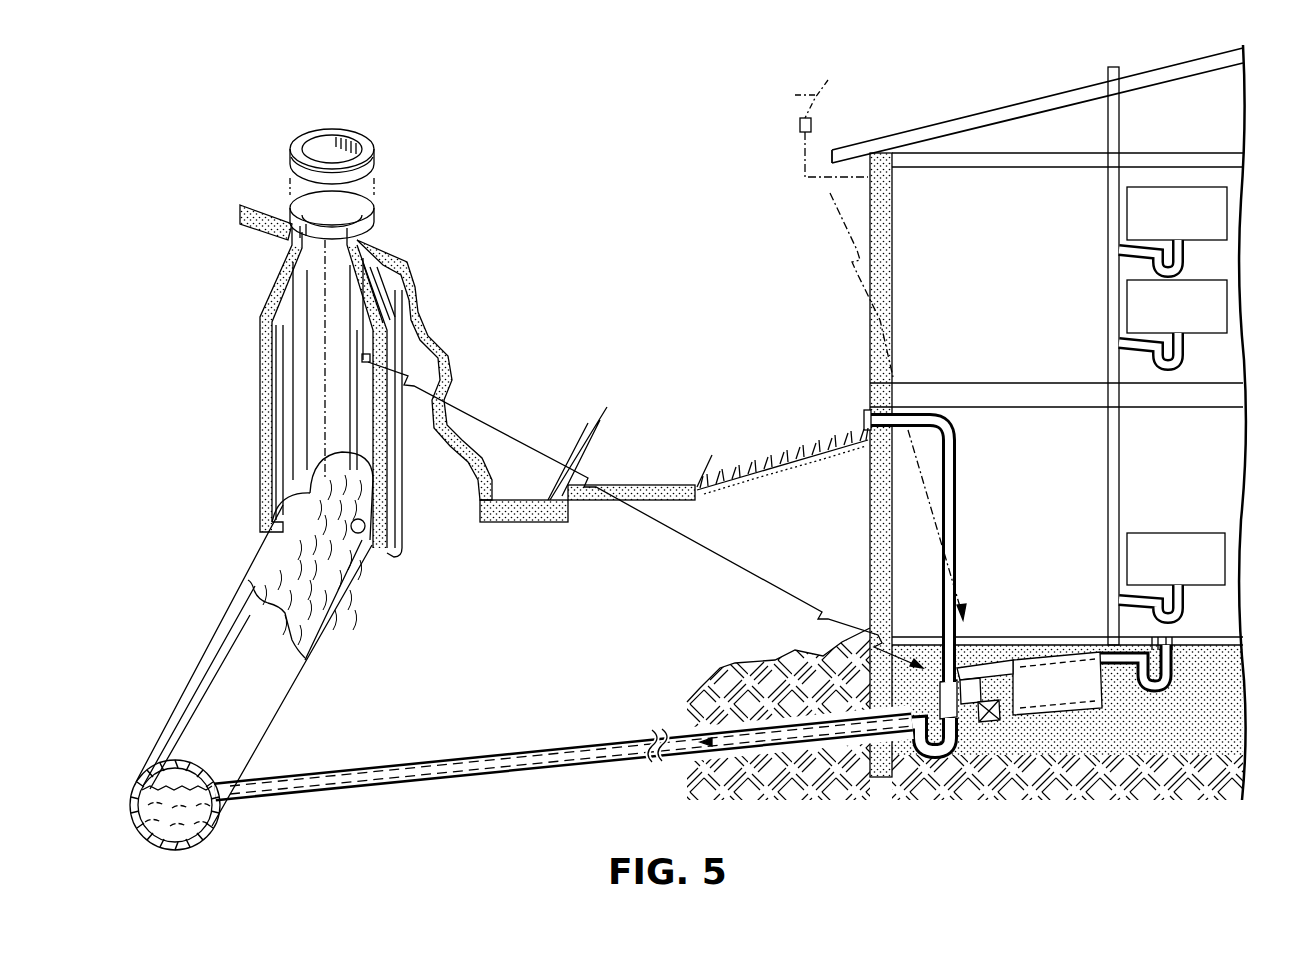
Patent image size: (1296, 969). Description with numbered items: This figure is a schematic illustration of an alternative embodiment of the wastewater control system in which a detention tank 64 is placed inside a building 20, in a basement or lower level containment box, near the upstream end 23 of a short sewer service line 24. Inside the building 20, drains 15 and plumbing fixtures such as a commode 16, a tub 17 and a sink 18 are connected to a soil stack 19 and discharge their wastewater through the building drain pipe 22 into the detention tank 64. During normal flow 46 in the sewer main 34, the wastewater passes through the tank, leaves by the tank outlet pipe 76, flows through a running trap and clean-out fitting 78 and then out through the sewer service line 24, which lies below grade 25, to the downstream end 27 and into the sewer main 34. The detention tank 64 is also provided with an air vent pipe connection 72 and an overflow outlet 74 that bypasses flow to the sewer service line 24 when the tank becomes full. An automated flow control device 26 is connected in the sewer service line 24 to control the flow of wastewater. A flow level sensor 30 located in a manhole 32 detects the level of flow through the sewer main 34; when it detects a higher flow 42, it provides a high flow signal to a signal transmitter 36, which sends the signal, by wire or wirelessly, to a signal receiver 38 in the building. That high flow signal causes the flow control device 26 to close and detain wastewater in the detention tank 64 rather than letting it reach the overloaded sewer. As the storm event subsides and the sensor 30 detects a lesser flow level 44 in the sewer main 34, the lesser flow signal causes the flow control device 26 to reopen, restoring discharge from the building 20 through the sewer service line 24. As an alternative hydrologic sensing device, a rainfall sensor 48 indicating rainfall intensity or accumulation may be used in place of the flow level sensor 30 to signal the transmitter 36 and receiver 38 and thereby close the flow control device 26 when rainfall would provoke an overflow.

The drains 15 is at (1185, 638).
The commode 16 is at (1227, 212).
The tub 17 is at (1227, 300).
The sink 18 is at (1225, 562).
The soil stack 19 is at (1119, 488).
The building 20 is at (870, 356).
The building drain pipe 22 is at (1157, 692).
The upstream end of the sewer service line 23 is at (965, 714).
The sewer service line 24 is at (610, 748).
The grade 25 is at (842, 448).
The automated flow control device 26 is at (977, 728).
The downstream end of the sewer service line 27 is at (418, 786).
The flow level sensor 30 is at (364, 534).
The manhole 32 is at (262, 345).
The sewer main 34 is at (132, 798).
The signal transmitter 36 is at (800, 125).
The signal receiver 38 is at (990, 664).
The higher flow 42 is at (186, 790).
The lesser flow level 44 is at (140, 818).
The normal flow 46 is at (156, 845).
The rainfall sensor 48 is at (826, 88).
The detention tank 64 is at (1057, 683).
The air vent pipe connection 72 is at (956, 475).
The overflow outlet 74 is at (962, 665).
The tank outlet pipe 76 is at (1008, 724).
The running trap and clean-out fitting 78 is at (925, 760).